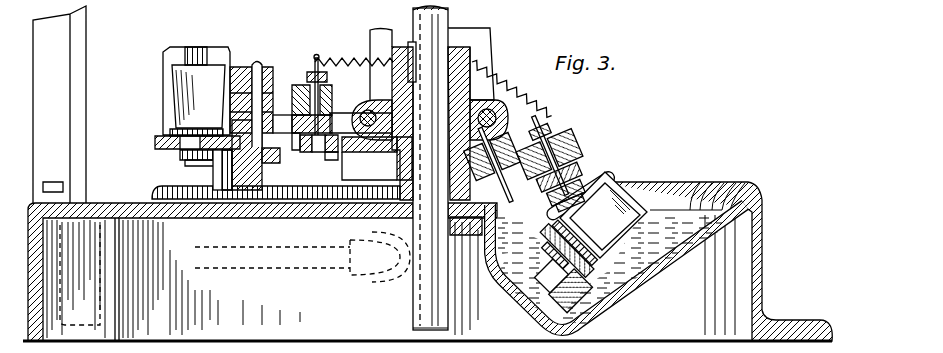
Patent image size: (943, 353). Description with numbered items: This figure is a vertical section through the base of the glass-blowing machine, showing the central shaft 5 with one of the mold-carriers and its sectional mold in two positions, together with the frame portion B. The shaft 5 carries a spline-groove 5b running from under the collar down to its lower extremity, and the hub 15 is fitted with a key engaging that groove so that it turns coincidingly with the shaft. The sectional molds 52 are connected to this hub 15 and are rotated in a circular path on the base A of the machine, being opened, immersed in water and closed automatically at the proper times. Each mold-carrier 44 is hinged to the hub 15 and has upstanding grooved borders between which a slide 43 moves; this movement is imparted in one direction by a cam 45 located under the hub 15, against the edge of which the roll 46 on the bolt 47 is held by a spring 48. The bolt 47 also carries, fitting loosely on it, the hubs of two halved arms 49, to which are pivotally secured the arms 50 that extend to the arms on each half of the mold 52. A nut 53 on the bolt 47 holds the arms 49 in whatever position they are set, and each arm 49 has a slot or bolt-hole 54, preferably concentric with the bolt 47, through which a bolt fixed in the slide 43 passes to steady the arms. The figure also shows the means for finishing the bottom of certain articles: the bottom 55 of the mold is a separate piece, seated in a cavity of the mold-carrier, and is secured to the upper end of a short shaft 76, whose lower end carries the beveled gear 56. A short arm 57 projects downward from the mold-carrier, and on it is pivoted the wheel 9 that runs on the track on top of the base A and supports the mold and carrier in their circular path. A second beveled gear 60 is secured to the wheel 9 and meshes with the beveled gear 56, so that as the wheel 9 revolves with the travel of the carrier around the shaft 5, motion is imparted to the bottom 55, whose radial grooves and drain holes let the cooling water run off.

The shaft 5 is at (464, 33).
The spline-groove 5b is at (400, 31).
The wheel 9 is at (243, 160).
The hub 15 is at (475, 52).
The slide 43 is at (300, 140).
The mold-carrier 44 is at (342, 112).
The cam 45 is at (362, 152).
The roll 46 is at (330, 152).
The bolt 47 is at (318, 152).
The spring 48 is at (345, 57).
The halved arms 49 is at (285, 112).
The arms 50 is at (275, 112).
The sectional mold 52 is at (672, 177).
The nut 53 is at (317, 55).
The slot or bolt-hole 54 is at (306, 76).
The bottom of the mold 55 is at (175, 131).
The beveled gear 56 is at (182, 155).
The short arm 57 is at (240, 200).
The second beveled gear 60 is at (213, 172).
The short shaft 76 is at (183, 158).
The base A is at (118, 193).
The plate B is at (59, 104).